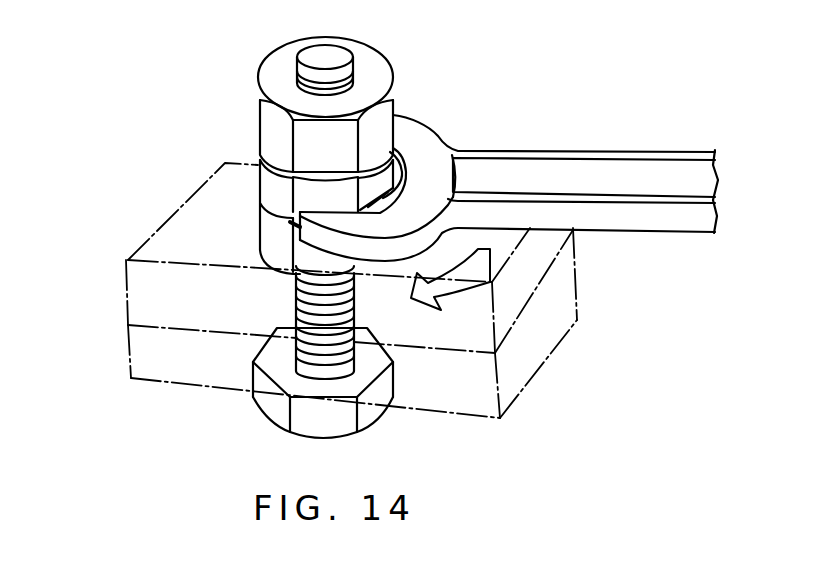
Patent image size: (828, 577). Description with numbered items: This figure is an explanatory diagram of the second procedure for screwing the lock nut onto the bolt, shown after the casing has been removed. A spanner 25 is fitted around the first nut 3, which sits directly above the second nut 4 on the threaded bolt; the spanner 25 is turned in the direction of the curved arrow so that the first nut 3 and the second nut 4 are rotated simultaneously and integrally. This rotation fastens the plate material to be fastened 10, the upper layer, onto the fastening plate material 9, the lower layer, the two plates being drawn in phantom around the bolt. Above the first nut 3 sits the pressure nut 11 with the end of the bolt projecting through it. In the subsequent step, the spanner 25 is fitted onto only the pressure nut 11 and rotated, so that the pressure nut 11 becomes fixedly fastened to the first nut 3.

The first nut 3 is at (260, 179).
The second nut 4 is at (260, 227).
The fastening plate material 9 is at (130, 348).
The plate material to be fastened 10 is at (123, 290).
The pressure nut 11 is at (272, 67).
The spanner 25 is at (593, 152).